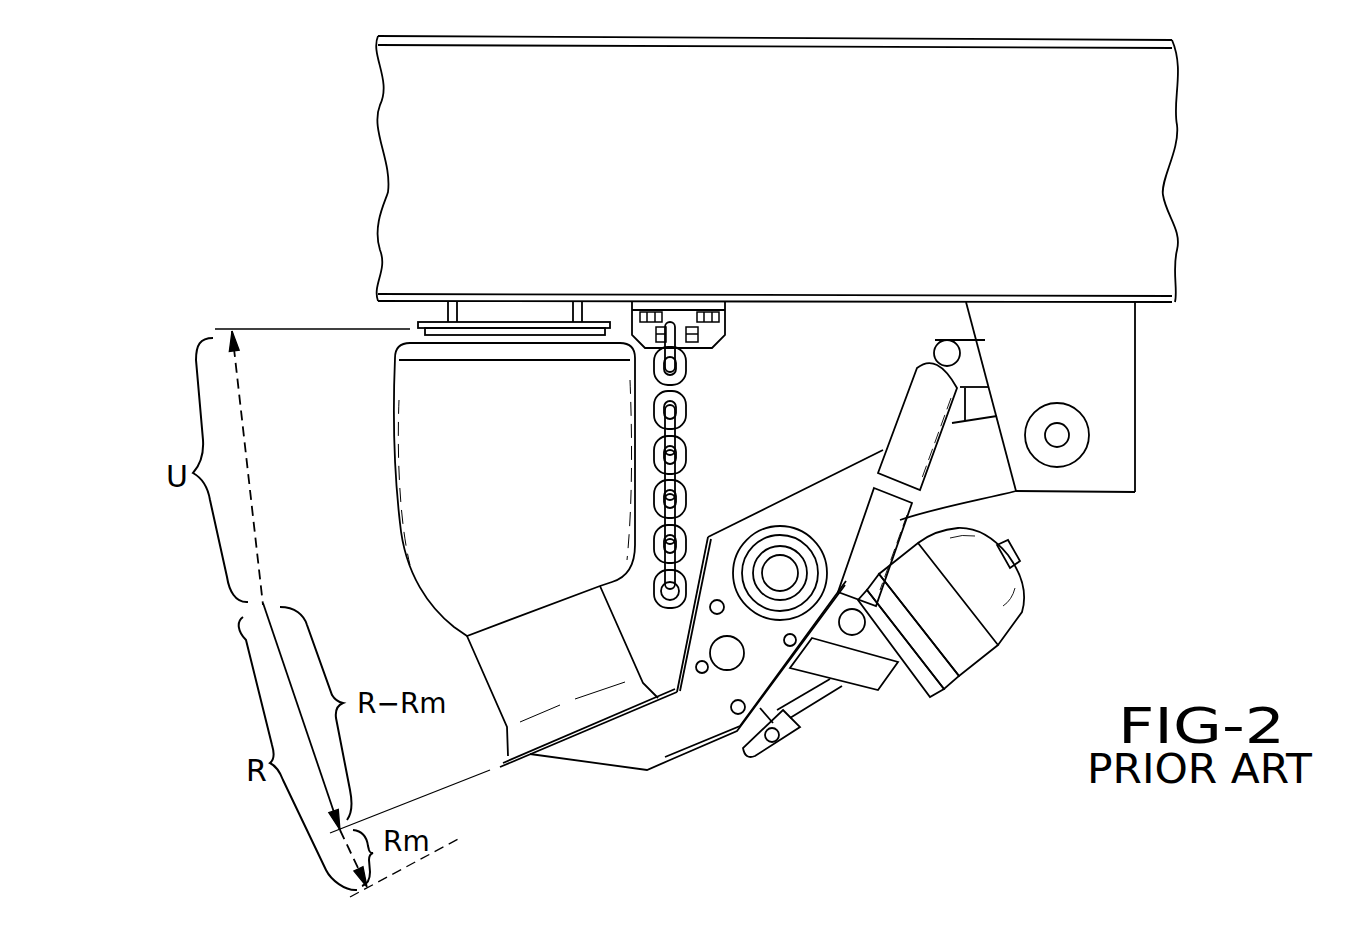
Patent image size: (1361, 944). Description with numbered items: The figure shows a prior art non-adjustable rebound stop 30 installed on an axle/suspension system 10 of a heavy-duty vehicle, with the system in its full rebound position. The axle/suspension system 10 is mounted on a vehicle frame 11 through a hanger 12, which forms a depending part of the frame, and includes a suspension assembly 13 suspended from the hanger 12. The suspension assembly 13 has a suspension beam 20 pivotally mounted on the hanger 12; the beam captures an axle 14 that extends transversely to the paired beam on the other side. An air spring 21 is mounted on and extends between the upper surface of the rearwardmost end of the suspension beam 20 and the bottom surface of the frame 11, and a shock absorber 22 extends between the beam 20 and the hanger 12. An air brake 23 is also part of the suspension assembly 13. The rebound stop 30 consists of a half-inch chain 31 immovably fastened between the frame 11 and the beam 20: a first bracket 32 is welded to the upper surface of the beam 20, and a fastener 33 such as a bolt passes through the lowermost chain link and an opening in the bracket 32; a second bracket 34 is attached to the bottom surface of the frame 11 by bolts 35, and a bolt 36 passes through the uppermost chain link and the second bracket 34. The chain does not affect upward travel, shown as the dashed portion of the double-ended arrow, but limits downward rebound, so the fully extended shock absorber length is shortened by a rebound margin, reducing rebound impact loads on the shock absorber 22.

The axle/suspension system 10 is at (1104, 540).
The vehicle frame 11 is at (1170, 192).
The hanger 12 is at (1136, 385).
The suspension assembly 13 is at (850, 460).
The axle 14 is at (780, 572).
The suspension beam 20 is at (773, 505).
The air spring 21 is at (534, 511).
The shock absorber 22 is at (912, 384).
The air brake 23 is at (1024, 615).
The prior art rebound stop 30 is at (640, 450).
The chain 31 is at (687, 453).
The first bracket 32 is at (688, 604).
The fastener 33 is at (668, 586).
The second bracket 34 is at (637, 333).
The bolts 35 is at (650, 313).
The bolt 36 is at (702, 333).